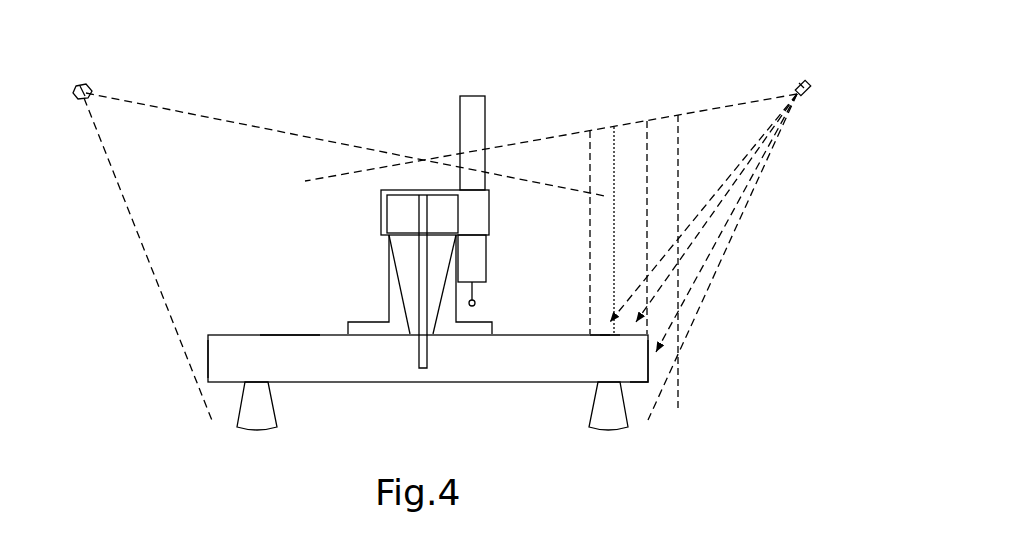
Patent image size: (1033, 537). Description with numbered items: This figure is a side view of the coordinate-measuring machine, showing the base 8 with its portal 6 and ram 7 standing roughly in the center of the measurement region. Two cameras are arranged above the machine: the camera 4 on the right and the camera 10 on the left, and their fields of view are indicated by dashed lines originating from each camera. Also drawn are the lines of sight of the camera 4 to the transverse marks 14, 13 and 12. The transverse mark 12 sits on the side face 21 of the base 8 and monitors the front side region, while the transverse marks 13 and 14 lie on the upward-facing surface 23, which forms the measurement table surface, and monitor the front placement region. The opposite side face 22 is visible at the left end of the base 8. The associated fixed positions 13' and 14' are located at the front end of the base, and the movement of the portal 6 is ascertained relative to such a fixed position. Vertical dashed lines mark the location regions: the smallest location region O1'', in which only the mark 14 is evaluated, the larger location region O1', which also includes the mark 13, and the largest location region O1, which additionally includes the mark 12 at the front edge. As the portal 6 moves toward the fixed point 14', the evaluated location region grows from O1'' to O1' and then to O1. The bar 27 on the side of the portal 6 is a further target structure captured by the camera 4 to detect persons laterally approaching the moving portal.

The image recording unit 4 is at (798, 76).
The portal 6 is at (407, 190).
The ram 7 is at (474, 96).
The base 8 is at (382, 370).
The camera 10 is at (89, 82).
The transverse mark 12 is at (652, 368).
The transverse mark 13 is at (557, 268).
The fixed position 13' is at (557, 268).
The transverse mark 14 is at (560, 296).
The fixed position 14' is at (560, 296).
The side face 21 is at (660, 353).
The side face 22 is at (208, 359).
The surface 23 is at (289, 333).
The bar 27 is at (426, 368).
The location region O1 is at (705, 263).
The location region O1' is at (620, 206).
The location region O1'' is at (578, 206).